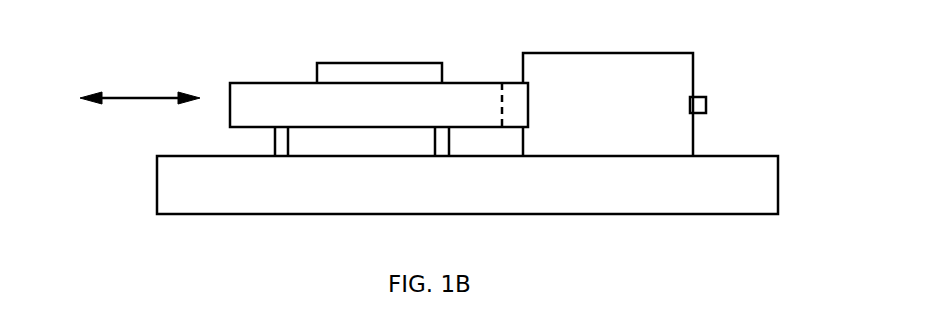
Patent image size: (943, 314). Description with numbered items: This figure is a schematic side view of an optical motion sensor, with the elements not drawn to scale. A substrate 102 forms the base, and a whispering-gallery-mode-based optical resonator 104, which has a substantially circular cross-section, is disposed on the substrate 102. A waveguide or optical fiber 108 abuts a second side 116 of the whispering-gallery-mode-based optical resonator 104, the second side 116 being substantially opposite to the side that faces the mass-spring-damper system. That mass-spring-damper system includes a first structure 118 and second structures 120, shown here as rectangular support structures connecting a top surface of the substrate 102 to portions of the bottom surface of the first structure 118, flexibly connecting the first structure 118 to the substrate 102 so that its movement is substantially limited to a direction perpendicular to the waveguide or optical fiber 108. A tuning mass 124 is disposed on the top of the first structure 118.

The substrate 102 is at (173, 157).
The whispering-gallery-mode-based optical resonator 104 is at (620, 62).
The waveguide or optical fiber 108 is at (697, 97).
The second side 116 is at (133, 97).
The first structure 118 is at (248, 90).
The second structures 120 is at (443, 157).
The tuning mass 124 is at (332, 70).